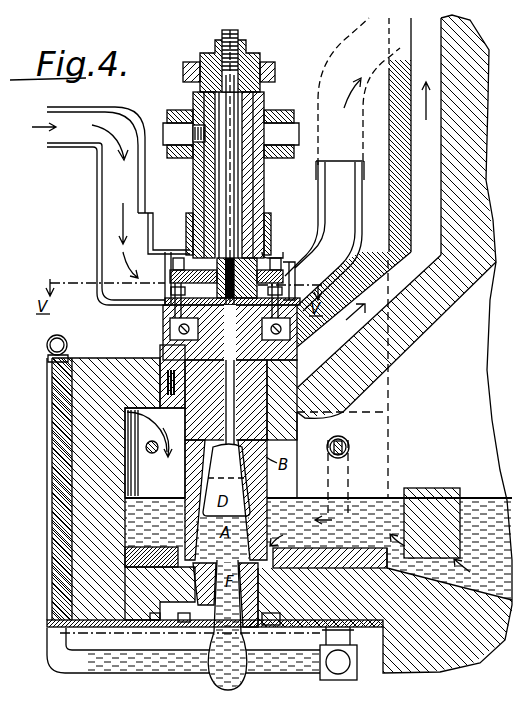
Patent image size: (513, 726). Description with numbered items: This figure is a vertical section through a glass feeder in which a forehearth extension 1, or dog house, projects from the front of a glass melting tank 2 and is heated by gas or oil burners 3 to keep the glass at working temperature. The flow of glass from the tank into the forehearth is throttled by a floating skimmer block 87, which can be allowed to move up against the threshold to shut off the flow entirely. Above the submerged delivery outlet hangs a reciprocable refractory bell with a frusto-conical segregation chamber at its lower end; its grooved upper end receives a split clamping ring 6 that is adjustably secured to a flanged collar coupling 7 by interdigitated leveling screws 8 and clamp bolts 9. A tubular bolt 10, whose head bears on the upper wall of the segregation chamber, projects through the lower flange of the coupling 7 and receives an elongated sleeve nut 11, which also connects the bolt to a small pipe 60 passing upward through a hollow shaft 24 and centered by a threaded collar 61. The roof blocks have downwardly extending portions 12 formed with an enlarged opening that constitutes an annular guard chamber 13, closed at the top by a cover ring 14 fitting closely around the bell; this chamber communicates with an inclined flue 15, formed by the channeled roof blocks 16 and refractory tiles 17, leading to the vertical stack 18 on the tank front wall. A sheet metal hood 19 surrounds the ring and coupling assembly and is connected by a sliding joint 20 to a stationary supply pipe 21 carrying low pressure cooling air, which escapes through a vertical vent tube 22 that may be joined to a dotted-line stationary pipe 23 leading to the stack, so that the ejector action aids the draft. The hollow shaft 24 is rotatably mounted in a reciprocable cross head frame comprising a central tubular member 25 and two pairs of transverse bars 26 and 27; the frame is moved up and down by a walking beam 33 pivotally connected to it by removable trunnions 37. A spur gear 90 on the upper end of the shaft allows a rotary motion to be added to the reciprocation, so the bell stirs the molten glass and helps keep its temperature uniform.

The forehearth extension 1 is at (90, 481).
The glass melting tank 2 is at (474, 425).
The gas or oil burner 3 is at (146, 447).
The split clamping ring 6 is at (172, 336).
The flanged collar coupling 7 is at (200, 279).
The leveling screw 8 is at (171, 291).
The clamp bolt 9 is at (292, 282).
The tubular bolt 10 is at (226, 382).
The sleeve nut 11 is at (189, 238).
The downwardly extending portion 12 is at (176, 446).
The annular guard chamber 13 is at (168, 385).
The annular cover ring 14 is at (160, 350).
The inclined flue 15 is at (369, 320).
The channeled roof block 16 is at (404, 350).
The refractory tile 17 is at (318, 333).
The vertical stack 18 is at (434, 71).
The sheet metal hood 19 is at (98, 294).
The sliding joint 20 is at (97, 226).
The stationary supply pipe 21 is at (110, 107).
The vertical vent tube 22 is at (350, 206).
The stationary pipe 23 is at (356, 68).
The hollow shaft 24 is at (252, 200).
The central tubular member 25 is at (258, 168).
The transverse bar 26 is at (189, 222).
The transverse bar 27 is at (194, 100).
The walking beam 33 is at (168, 113).
The removable trunnion 37 is at (173, 148).
The small pipe 60 is at (226, 193).
The threaded collar 61 is at (220, 44).
The floating skimmer block 87 is at (428, 490).
The spur gear 90 is at (183, 70).